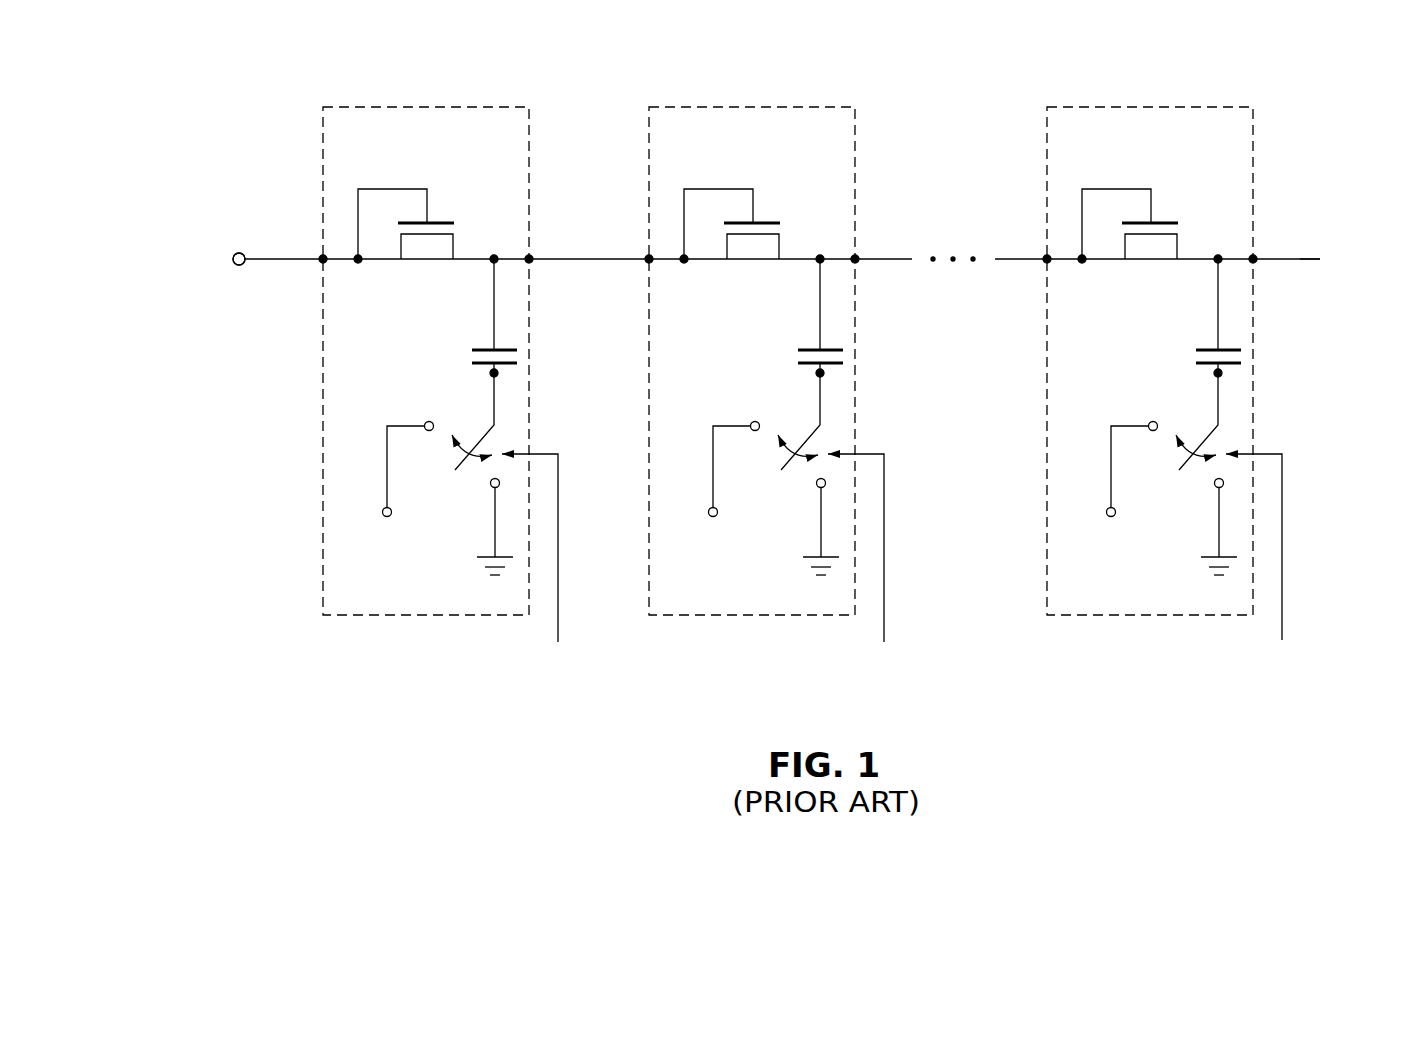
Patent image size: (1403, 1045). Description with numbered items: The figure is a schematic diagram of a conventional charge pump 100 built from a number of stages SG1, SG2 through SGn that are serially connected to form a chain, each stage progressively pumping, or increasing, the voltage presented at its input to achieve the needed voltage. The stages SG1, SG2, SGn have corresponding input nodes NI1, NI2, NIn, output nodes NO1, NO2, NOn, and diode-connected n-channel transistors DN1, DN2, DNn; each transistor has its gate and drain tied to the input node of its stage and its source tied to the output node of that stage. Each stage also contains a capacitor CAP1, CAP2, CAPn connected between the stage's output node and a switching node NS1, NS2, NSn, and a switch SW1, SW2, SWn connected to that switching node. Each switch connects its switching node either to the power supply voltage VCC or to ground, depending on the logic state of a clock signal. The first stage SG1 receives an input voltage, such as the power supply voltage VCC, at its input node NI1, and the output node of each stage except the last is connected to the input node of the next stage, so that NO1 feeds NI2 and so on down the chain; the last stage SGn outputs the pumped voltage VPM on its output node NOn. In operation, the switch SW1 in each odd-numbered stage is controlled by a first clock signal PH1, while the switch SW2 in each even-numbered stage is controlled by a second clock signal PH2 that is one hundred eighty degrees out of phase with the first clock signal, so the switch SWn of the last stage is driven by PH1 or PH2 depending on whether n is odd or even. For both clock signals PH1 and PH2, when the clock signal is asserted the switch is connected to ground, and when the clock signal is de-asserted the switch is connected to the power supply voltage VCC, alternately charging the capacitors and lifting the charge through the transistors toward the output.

The charge pump 100 is at (787, 403).
The first stage SG1 is at (412, 107).
The second stage SG2 is at (756, 361).
The last stage SGn is at (1185, 403).
The diode-connected n-channel transistor DN1 is at (441, 204).
The diode-connected n-channel transistor DN2 is at (738, 202).
The diode-connected n-channel transistor DNn is at (1136, 202).
The input node NI1 is at (318, 254).
The input node NI2 is at (627, 220).
The input node NIn is at (1025, 220).
The output node NO1 is at (533, 268).
The output node NO2 is at (880, 301).
The output node NOn is at (1278, 301).
The capacitor CAP1 is at (468, 346).
The capacitor CAP2 is at (770, 314).
The capacitor CAPn is at (1168, 314).
The switching node NS1 is at (485, 374).
The switching node NS2 is at (761, 385).
The switching node NSn is at (1159, 385).
The switch SW1 is at (440, 503).
The switch SW2 is at (756, 480).
The switch SWn is at (1154, 480).
The first clock signal PH1 is at (543, 564).
The second clock signal PH2 is at (869, 564).
The power supply voltage VCC is at (209, 260).
The pumped voltage VPM is at (1340, 260).